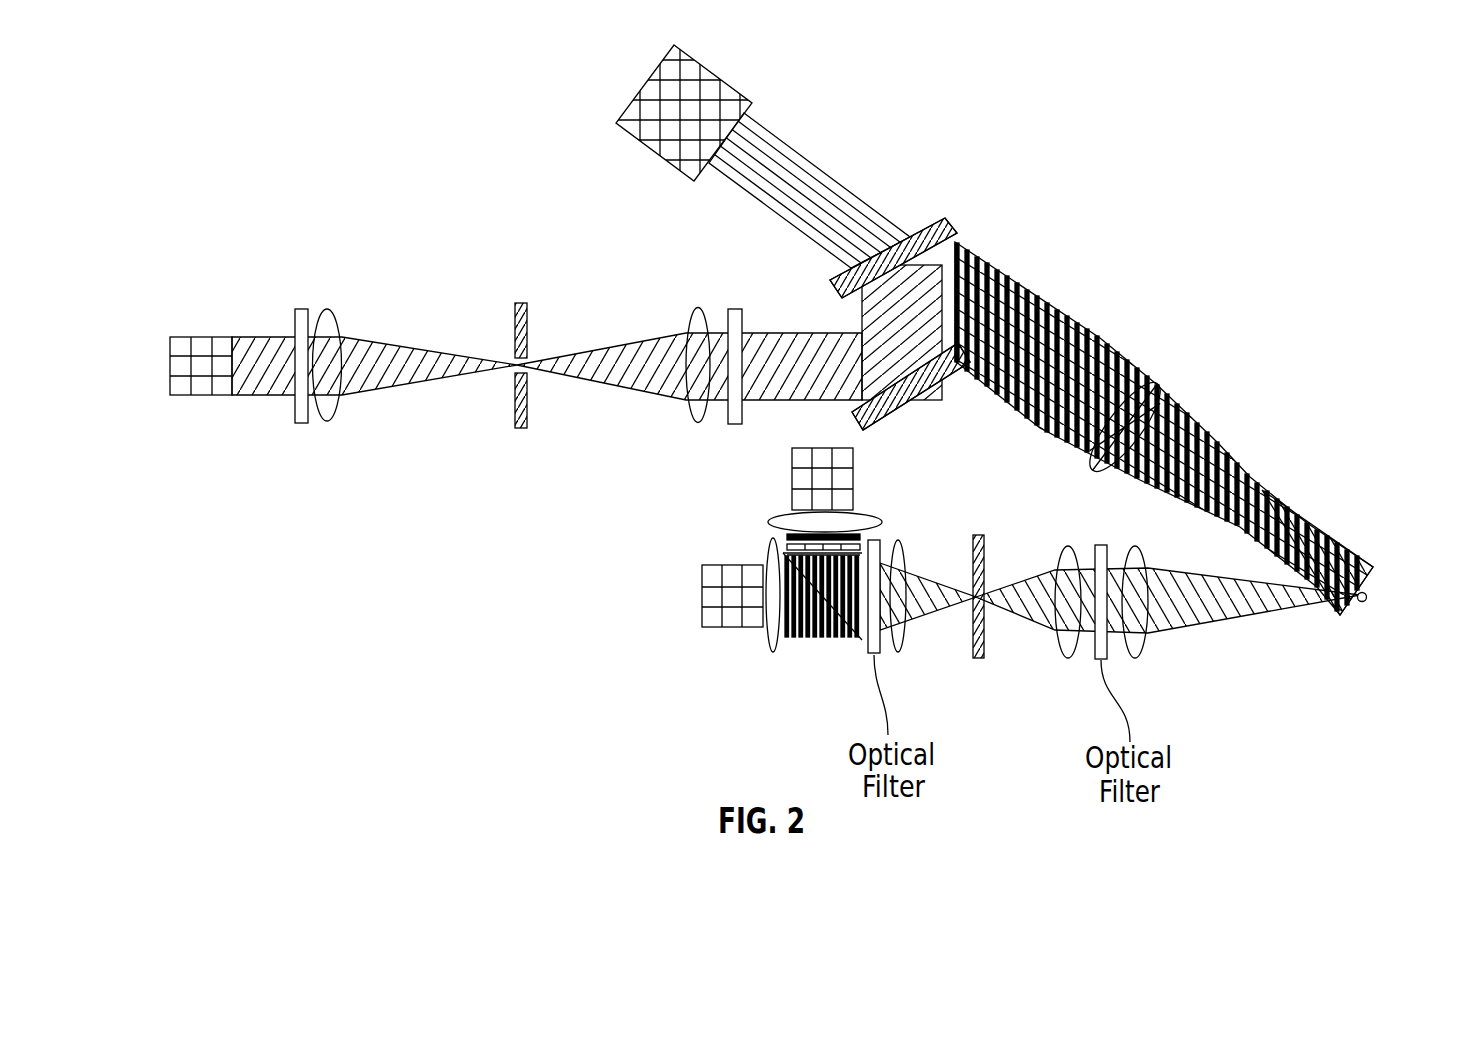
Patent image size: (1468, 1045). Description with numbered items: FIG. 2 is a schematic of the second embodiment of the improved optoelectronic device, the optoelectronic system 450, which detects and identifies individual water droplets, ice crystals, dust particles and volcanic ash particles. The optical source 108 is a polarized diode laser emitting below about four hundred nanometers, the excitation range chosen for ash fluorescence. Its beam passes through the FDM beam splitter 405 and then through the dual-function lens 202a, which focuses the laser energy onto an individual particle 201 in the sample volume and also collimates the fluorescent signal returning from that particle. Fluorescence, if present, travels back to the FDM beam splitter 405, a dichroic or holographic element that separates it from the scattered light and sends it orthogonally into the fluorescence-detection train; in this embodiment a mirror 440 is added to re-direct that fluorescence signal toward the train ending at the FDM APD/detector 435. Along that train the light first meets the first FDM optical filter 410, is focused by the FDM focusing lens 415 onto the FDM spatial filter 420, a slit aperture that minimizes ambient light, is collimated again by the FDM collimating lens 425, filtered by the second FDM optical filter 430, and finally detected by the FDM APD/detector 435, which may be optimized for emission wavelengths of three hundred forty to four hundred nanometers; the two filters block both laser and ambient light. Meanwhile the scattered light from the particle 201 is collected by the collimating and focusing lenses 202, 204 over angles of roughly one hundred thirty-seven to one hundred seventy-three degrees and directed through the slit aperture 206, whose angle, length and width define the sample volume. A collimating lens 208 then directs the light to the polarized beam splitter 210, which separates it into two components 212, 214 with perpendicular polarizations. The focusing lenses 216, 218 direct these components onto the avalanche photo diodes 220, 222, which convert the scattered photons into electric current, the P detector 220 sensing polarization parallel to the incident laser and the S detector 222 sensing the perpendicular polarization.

The optical source 108 is at (713, 75).
The FDM beam splitter 405 is at (937, 218).
The FDM optical filter 1 410 is at (735, 308).
The FDM focusing lens 415 is at (690, 315).
The FDM spatial filter 420 is at (520, 430).
The FDM collimating lens 425 is at (327, 310).
The FDM optical filter 2 430 is at (296, 426).
The FDM APD/detector 435 is at (170, 368).
The mirror 440 is at (893, 392).
The optoelectronic system 450 is at (1349, 83).
The dual-function lens 202a is at (1140, 383).
The particle 201 is at (1370, 603).
The collimating and focusing lens 202 is at (1135, 660).
The collimating and focusing lens 204 is at (1068, 660).
The slit aperture 206 is at (980, 660).
The collimating lens 208 is at (897, 653).
The polarized beam splitter 210 is at (858, 642).
The scattered light component 212 is at (808, 630).
The scattered light component 214 is at (862, 535).
The focusing lens 216 is at (770, 515).
The focusing lens 218 is at (766, 643).
The avalanche photo diode 220 is at (702, 596).
The avalanche photo diode 222 is at (855, 487).